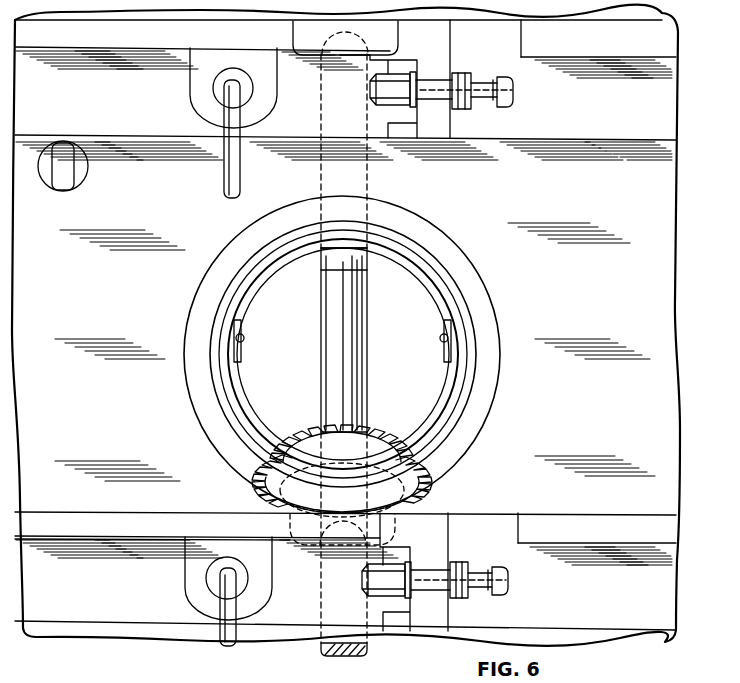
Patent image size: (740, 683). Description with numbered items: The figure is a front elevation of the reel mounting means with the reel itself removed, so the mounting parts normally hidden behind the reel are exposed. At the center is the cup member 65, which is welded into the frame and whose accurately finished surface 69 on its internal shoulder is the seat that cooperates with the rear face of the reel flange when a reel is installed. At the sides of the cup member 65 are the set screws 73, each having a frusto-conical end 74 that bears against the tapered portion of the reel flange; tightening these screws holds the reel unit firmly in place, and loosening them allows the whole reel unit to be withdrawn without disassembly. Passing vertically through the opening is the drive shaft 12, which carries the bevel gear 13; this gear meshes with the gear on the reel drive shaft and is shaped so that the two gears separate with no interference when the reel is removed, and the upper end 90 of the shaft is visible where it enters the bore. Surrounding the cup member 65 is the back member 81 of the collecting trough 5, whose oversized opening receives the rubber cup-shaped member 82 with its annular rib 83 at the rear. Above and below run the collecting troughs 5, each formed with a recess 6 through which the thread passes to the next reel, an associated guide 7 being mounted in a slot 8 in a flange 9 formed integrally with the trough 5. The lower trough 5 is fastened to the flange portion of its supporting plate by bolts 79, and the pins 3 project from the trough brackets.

The locating pin 3 is at (233, 170).
The collecting trough 5 is at (582, 111).
The recess 6 is at (476, 72).
The guide 7 is at (488, 78).
The slot 8 is at (396, 92).
The flange 9 is at (443, 129).
The drive shaft 12 is at (367, 320).
The gear 13 is at (303, 414).
The cup member 65 is at (424, 392).
The finished surface 69 is at (428, 382).
The set screw 73 is at (245, 338).
The frusto-conical end 74 is at (242, 333).
The bolt 79 is at (70, 173).
The back member 81 is at (617, 300).
The cup-shaped member 82 is at (197, 403).
The annular rib 83 is at (438, 432).
The shaft end 90 is at (335, 252).